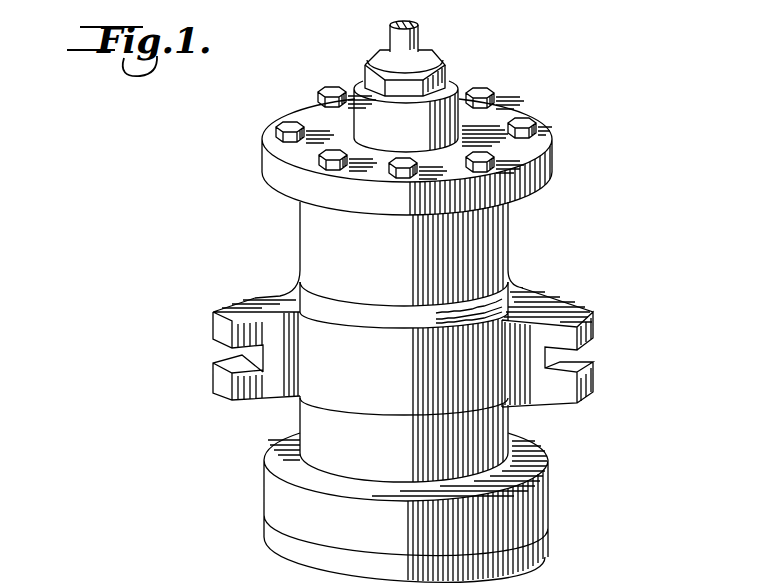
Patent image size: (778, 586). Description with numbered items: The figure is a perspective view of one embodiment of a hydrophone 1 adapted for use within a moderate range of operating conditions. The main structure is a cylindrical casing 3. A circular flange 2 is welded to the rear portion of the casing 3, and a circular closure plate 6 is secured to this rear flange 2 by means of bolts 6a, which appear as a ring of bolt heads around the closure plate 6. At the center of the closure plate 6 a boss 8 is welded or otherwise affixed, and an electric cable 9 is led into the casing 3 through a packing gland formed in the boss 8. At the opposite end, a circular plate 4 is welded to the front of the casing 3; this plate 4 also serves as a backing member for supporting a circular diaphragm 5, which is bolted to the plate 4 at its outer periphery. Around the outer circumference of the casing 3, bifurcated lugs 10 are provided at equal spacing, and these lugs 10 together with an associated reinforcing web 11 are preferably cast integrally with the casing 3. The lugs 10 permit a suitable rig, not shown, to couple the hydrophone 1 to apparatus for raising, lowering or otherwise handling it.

The hydrophone 1 is at (523, 263).
The circular flange 2 is at (270, 178).
The cylindrical casing 3 is at (358, 262).
The circular plate 4 is at (278, 498).
The circular diaphragm 5 is at (285, 543).
The circular closure plate 6 is at (265, 157).
The bolts 6a is at (552, 127).
The boss 8 is at (366, 68).
The electric cable 9 is at (419, 28).
The bifurcated lugs 10 is at (270, 388).
The reinforcing web 11 is at (358, 376).